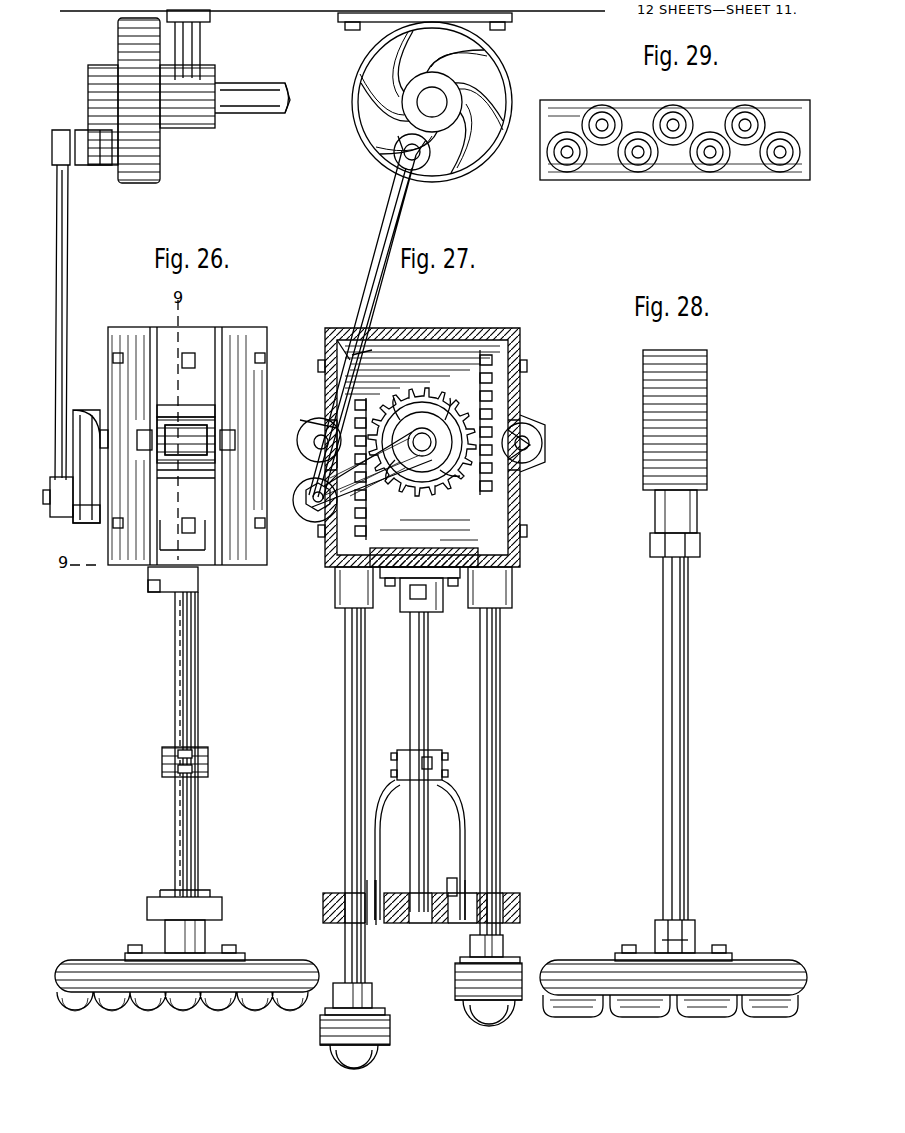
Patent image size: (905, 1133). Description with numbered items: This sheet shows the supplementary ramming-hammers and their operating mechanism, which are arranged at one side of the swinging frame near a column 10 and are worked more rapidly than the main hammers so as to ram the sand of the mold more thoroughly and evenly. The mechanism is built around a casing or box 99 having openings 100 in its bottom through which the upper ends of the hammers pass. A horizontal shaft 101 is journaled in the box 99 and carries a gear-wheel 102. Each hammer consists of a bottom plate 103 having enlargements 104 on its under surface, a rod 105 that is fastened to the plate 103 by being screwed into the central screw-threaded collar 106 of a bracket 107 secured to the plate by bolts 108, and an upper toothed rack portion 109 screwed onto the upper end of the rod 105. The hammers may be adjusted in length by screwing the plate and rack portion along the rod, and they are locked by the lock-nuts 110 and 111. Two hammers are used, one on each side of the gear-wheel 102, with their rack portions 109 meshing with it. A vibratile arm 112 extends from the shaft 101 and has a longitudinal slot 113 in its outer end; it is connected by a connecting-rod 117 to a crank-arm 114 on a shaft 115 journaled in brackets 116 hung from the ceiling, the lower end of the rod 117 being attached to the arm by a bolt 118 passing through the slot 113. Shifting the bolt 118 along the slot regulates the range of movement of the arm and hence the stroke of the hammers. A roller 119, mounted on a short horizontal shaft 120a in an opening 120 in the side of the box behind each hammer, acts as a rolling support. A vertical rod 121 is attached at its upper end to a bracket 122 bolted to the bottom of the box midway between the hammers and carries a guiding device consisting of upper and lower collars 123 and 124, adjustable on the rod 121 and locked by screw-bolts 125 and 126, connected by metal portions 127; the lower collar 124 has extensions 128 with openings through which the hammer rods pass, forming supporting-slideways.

In FIG. 26, the vertical column 10 is at (136, 945).
In FIG. 26, the casing or box 99 is at (235, 345).
In FIG. 27, the casing or box 99 is at (470, 340).
In FIG. 27, the opening 100 is at (470, 545).
In FIG. 26, the horizontal shaft 101 is at (102, 432).
In FIG. 27, the horizontal shaft 101 is at (522, 425).
In FIG. 27, the gear-wheel 102 is at (420, 440).
In FIG. 26, the bottom plate 103 is at (240, 982).
In FIG. 27, the bottom plate 103 is at (362, 1030).
In FIG. 28, the bottom plate 103 is at (752, 980).
In FIG. 29, the bottom plate 103 is at (778, 116).
In FIG. 26, the enlargement 104 is at (150, 1002).
In FIG. 27, the enlargement 104 is at (357, 1067).
In FIG. 28, the enlargement 104 is at (630, 1016).
In FIG. 29, the enlargement 104 is at (673, 125).
In FIG. 26, the rod 105 is at (182, 698).
In FIG. 27, the rod 105 is at (352, 669).
In FIG. 28, the rod 105 is at (686, 772).
In FIG. 26, the screw-threaded collar 106 is at (206, 935).
In FIG. 27, the screw-threaded collar 106 is at (362, 990).
In FIG. 28, the screw-threaded collar 106 is at (692, 940).
In FIG. 26, the bracket 107 is at (128, 955).
In FIG. 27, the bracket 107 is at (470, 962).
In FIG. 28, the bracket 107 is at (690, 905).
In FIG. 27, the bolt 108 is at (324, 1020).
In FIG. 28, the bolt 108 is at (628, 950).
In FIG. 27, the toothed rack portion 109 is at (522, 345).
In FIG. 28, the toothed rack portion 109 is at (680, 375).
In FIG. 28, the lock-nut 110 is at (658, 950).
In FIG. 28, the lock-nut 111 is at (672, 550).
In FIG. 26, the vibratile arm 112 is at (82, 524).
In FIG. 27, the vibratile arm 112 is at (305, 514).
In FIG. 27, the longitudinal slot 113 is at (310, 494).
In FIG. 26, the crank-arm 114 is at (88, 148).
In FIG. 27, the crank-arm 114 is at (365, 128).
In FIG. 29, the crank-arm 114 is at (567, 145).
In FIG. 26, the shaft 115 is at (245, 100).
In FIG. 27, the shaft 115 is at (432, 100).
In FIG. 26, the bracket 116 is at (188, 60).
In FIG. 27, the bracket 116 is at (362, 24).
In FIG. 26, the connecting-rod 117 is at (66, 300).
In FIG. 27, the connecting-rod 117 is at (372, 282).
In FIG. 26, the bolt 118 is at (60, 520).
In FIG. 27, the bolt 118 is at (335, 432).
In FIG. 26, the roller 119 is at (208, 425).
In FIG. 27, the roller 119 is at (545, 445).
In FIG. 27, the opening 120 is at (372, 345).
In FIG. 27, the short horizontal shaft 120a is at (338, 420).
In FIG. 27, the vertical rod 121 is at (418, 672).
In FIG. 27, the bracket 122 is at (348, 590).
In FIG. 27, the upper collar 123 is at (410, 752).
In FIG. 27, the lower collar 124 is at (445, 880).
In FIG. 27, the screw-bolt 125 is at (426, 752).
In FIG. 27, the screw-bolt 126 is at (458, 893).
In FIG. 27, the metal portion 127 is at (375, 820).
In FIG. 26, the extension 128 is at (185, 910).
In FIG. 27, the extension 128 is at (328, 906).